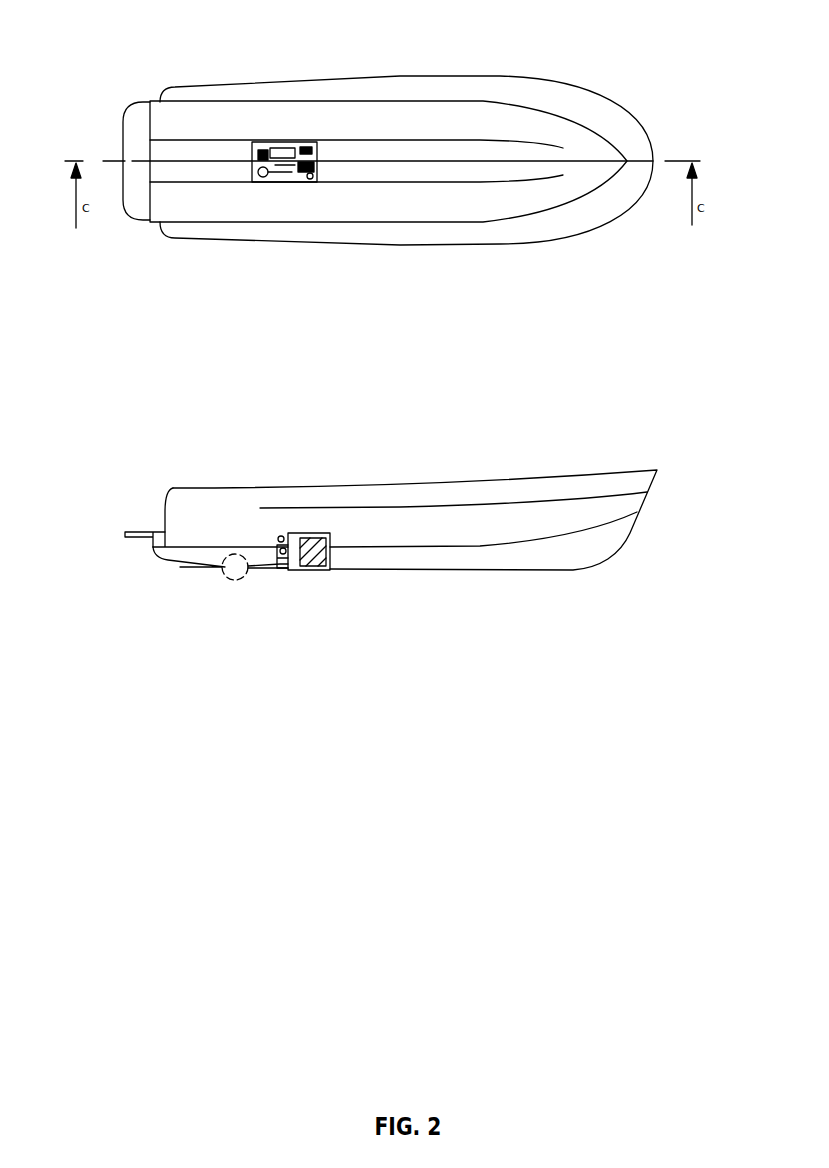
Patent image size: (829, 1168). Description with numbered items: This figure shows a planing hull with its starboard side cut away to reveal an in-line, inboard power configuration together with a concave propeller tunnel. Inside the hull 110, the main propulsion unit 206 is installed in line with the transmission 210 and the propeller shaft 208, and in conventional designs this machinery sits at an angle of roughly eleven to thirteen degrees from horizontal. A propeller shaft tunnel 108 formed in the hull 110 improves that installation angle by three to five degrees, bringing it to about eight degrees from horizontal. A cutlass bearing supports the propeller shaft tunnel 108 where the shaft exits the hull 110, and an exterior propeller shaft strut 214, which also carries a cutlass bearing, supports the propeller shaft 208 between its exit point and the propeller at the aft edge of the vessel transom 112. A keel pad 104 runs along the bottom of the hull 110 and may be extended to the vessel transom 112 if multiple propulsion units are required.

The keel pad 104 is at (220, 173).
The hull 110 is at (567, 215).
The vessel transom 112 is at (148, 205).
The main propulsion unit 206 is at (278, 180).
The propeller shaft 208 is at (178, 570).
The propeller shaft tunnel 108 is at (233, 579).
The transmission 210 is at (290, 555).
The propeller shaft strut 214 is at (245, 580).